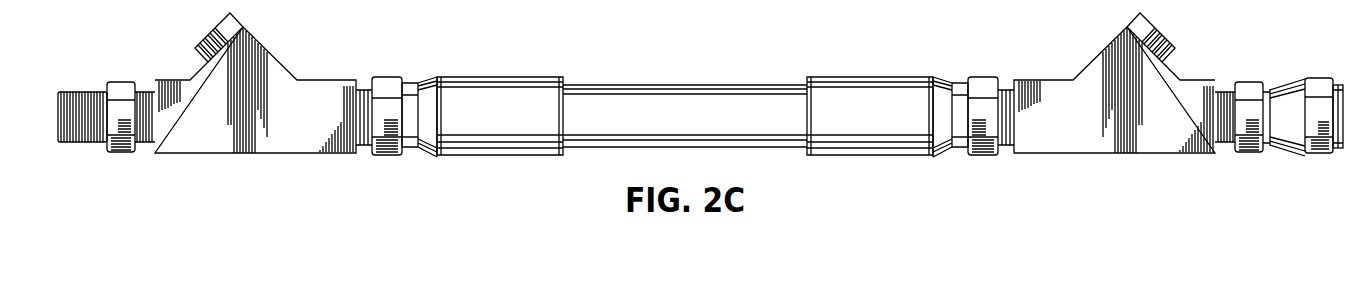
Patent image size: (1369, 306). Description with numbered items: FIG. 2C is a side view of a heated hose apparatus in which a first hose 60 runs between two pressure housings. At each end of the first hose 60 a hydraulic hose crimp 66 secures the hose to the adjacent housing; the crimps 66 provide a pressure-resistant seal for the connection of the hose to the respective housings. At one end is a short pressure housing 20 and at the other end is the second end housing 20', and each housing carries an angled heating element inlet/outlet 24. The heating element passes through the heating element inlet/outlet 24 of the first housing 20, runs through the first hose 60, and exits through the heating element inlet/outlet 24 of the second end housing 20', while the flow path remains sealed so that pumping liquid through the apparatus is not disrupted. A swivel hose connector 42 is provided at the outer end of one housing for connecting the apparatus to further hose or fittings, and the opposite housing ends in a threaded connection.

The short pressure housing 20 is at (1114, 109).
The second end housing 20' is at (255, 108).
The heating element inlet/outlet 24 is at (222, 26).
The swivel hose connector 42 is at (1292, 148).
The first hose 60 is at (692, 84).
The hydraulic hose crimp 66 is at (492, 158).